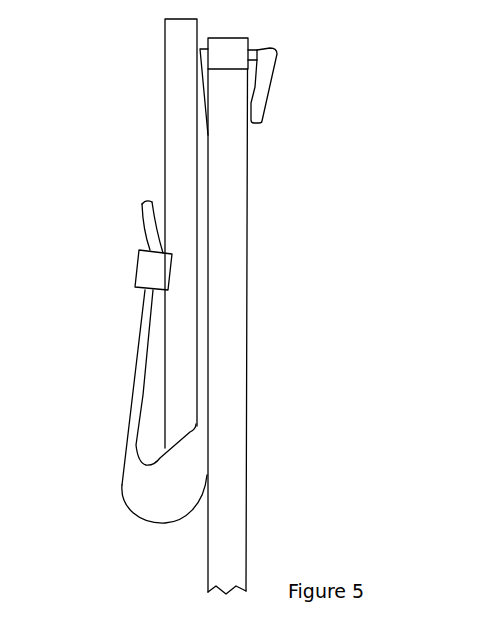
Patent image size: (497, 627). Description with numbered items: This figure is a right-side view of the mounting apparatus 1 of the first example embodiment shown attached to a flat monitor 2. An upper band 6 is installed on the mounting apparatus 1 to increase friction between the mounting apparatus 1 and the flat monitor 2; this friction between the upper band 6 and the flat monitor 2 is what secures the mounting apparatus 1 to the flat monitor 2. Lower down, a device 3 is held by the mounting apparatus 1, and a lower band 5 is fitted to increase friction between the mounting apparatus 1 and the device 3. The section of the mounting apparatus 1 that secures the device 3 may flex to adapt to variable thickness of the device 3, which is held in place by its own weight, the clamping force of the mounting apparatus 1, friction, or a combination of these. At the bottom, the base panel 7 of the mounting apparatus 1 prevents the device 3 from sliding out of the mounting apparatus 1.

The mounting apparatus 1 is at (258, 94).
The flat monitor 2 is at (223, 253).
The device 3 is at (183, 114).
The lower band 5 is at (152, 272).
The upper band 6 is at (238, 47).
The base panel 7 is at (162, 498).